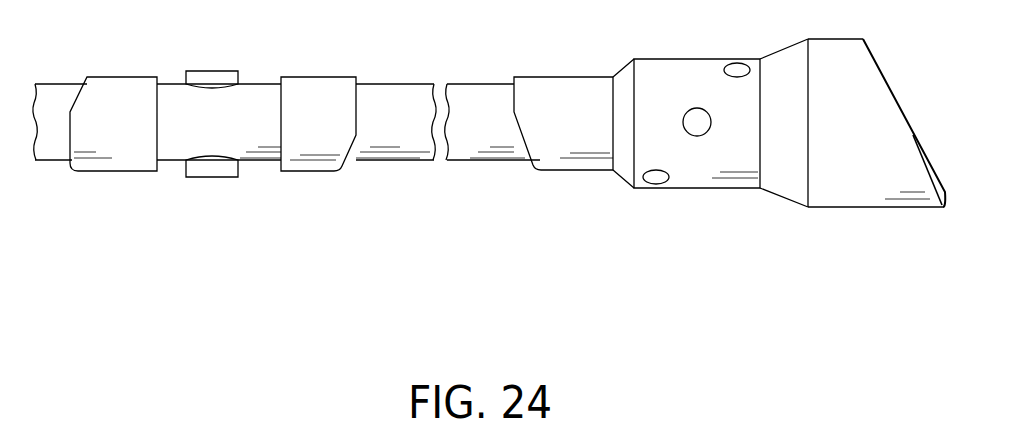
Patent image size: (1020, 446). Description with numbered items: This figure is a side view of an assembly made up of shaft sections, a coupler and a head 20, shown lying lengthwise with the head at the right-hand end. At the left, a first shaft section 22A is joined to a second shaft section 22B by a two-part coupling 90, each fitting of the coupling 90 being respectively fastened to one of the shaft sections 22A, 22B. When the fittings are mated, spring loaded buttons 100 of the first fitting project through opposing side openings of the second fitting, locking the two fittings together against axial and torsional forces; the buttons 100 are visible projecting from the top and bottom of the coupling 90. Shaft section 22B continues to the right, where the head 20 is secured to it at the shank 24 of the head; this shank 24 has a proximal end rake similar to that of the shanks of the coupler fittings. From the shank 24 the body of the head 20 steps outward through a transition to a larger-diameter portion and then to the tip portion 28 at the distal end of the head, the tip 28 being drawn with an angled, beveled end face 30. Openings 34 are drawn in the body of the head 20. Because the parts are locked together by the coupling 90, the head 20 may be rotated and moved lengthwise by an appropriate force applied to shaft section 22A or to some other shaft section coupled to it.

The head 20 is at (733, 246).
The shaft section 22A is at (50, 82).
The shaft section 22B is at (393, 83).
The shank portion 24 is at (556, 76).
The tip portion 28 is at (794, 191).
The beveled tip 30 is at (893, 90).
The apertures 34 is at (694, 108).
The coupling 90 is at (262, 68).
The spring loaded buttons 100 is at (210, 70).